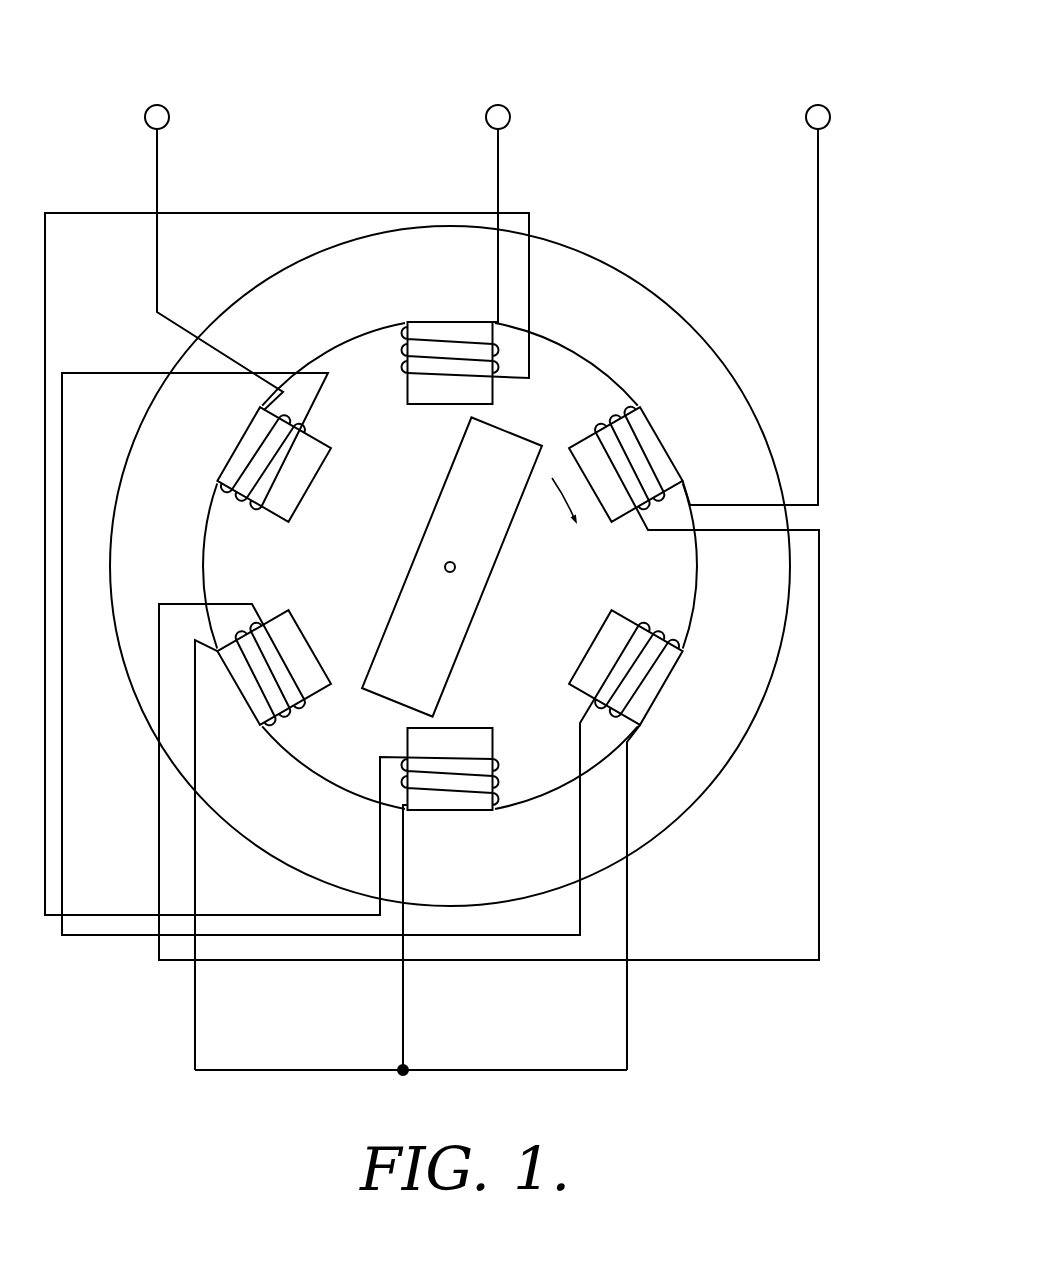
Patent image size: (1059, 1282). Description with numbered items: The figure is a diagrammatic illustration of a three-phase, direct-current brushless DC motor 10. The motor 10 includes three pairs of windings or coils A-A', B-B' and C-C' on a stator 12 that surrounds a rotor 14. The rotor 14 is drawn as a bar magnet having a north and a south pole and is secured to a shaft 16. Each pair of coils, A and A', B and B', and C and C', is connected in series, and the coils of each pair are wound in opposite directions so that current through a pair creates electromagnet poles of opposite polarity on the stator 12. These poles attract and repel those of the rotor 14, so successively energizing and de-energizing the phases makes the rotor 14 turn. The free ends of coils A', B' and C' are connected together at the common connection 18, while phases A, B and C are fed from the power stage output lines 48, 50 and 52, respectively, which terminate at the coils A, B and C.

The brushless DC motor 10 is at (678, 60).
The stator 12 is at (652, 315).
The rotor 14 is at (488, 548).
The shaft 16 is at (447, 557).
The connection of free ends of coils 18 is at (452, 1070).
The power stage output line 48 is at (498, 167).
The power stage output line 50 is at (818, 173).
The power stage output line 52 is at (157, 165).